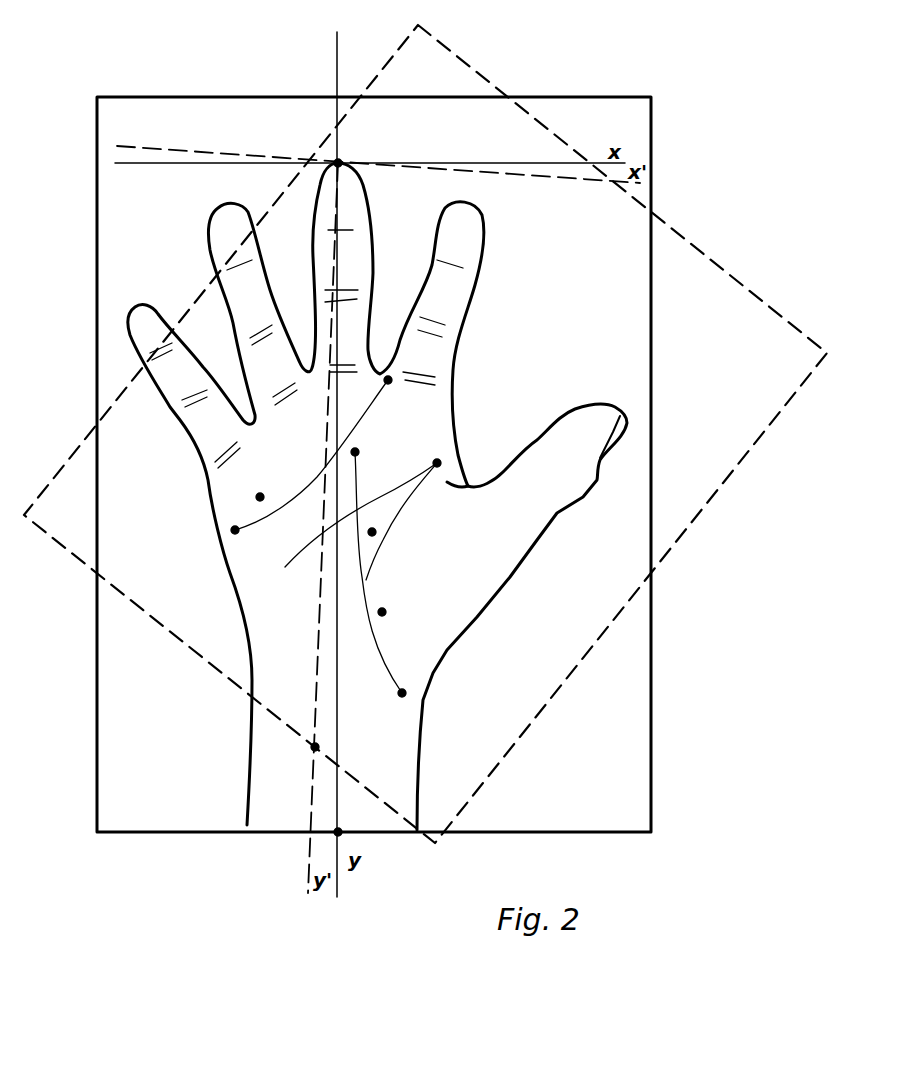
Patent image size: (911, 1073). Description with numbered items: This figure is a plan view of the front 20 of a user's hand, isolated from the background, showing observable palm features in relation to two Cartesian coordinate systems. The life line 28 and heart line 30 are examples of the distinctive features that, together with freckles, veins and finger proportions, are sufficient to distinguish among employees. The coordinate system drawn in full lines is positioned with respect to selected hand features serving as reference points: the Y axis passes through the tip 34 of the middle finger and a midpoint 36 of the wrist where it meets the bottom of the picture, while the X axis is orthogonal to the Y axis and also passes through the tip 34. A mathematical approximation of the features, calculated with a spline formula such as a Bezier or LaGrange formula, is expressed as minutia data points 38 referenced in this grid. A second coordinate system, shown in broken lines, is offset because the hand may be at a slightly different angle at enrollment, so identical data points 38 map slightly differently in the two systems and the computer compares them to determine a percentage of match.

The front of the user's hand 20 is at (503, 352).
The life line 28 is at (375, 568).
The heart line 30 is at (282, 509).
The tip of the middle finger 34 is at (338, 163).
The midpoint of the wrist 36 is at (312, 752).
The minutia data points 38 is at (355, 452).